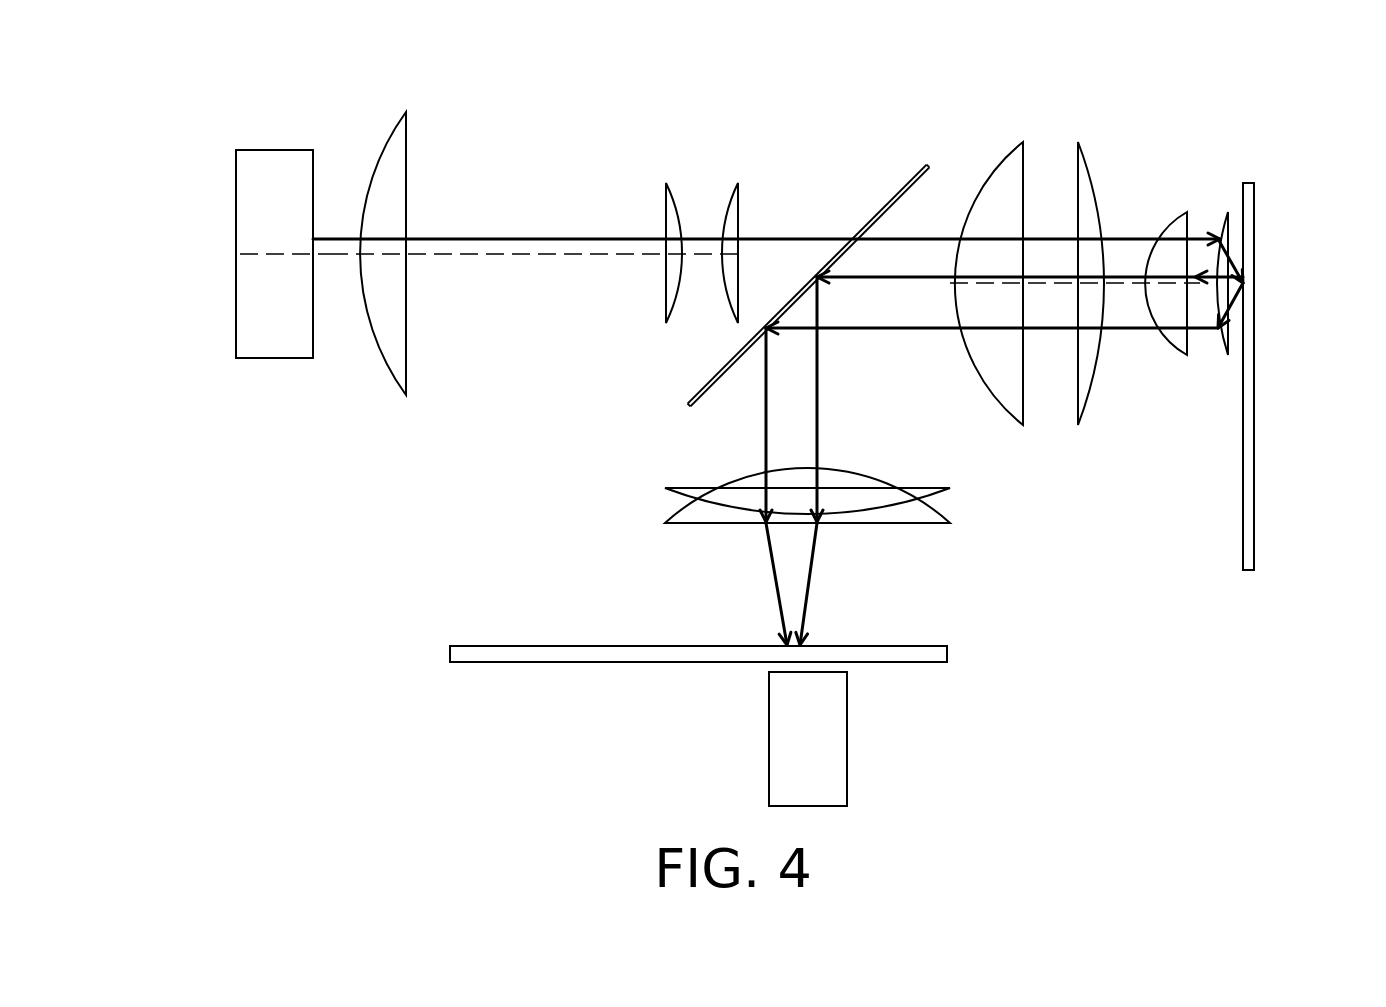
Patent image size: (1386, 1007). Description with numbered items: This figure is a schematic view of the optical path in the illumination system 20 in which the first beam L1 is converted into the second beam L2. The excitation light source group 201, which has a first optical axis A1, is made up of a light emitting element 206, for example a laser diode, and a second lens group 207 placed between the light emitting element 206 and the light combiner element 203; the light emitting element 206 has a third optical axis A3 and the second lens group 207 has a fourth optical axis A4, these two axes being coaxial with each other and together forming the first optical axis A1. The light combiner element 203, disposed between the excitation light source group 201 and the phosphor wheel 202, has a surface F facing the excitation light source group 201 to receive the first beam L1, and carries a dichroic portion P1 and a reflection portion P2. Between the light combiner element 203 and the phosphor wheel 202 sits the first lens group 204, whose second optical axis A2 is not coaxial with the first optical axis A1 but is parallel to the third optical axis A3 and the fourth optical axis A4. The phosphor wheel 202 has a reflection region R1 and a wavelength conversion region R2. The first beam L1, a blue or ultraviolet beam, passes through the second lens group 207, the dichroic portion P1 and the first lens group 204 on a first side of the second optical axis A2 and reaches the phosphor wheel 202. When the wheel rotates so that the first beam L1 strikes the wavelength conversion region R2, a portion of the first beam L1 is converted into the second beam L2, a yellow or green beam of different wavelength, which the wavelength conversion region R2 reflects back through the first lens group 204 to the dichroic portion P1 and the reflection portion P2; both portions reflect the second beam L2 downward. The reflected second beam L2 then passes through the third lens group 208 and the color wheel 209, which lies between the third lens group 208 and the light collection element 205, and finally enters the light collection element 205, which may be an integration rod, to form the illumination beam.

The illumination system 20 is at (176, 90).
The excitation light source group 201 is at (253, 52).
The light emitting element 206 is at (290, 158).
The second lens group 207 is at (738, 101).
The light combiner element 203 is at (888, 202).
The first lens group 204 is at (1228, 113).
The phosphor wheel 202 is at (1252, 551).
The third lens group 208 is at (970, 462).
The color wheel 209 is at (487, 653).
The light collection element 205 is at (820, 745).
The first beam L1 is at (572, 237).
The second beam L2 is at (860, 330).
The surface F is at (860, 226).
The dichroic portion P1 is at (858, 220).
The reflection portion P2 is at (704, 388).
The reflection region R1 is at (1241, 528).
The wavelength conversion region R2 is at (1242, 195).
The first optical axis A1 is at (258, 442).
The second optical axis A2 is at (1125, 285).
The third optical axis A3 is at (290, 256).
The fourth optical axis A4 is at (512, 256).